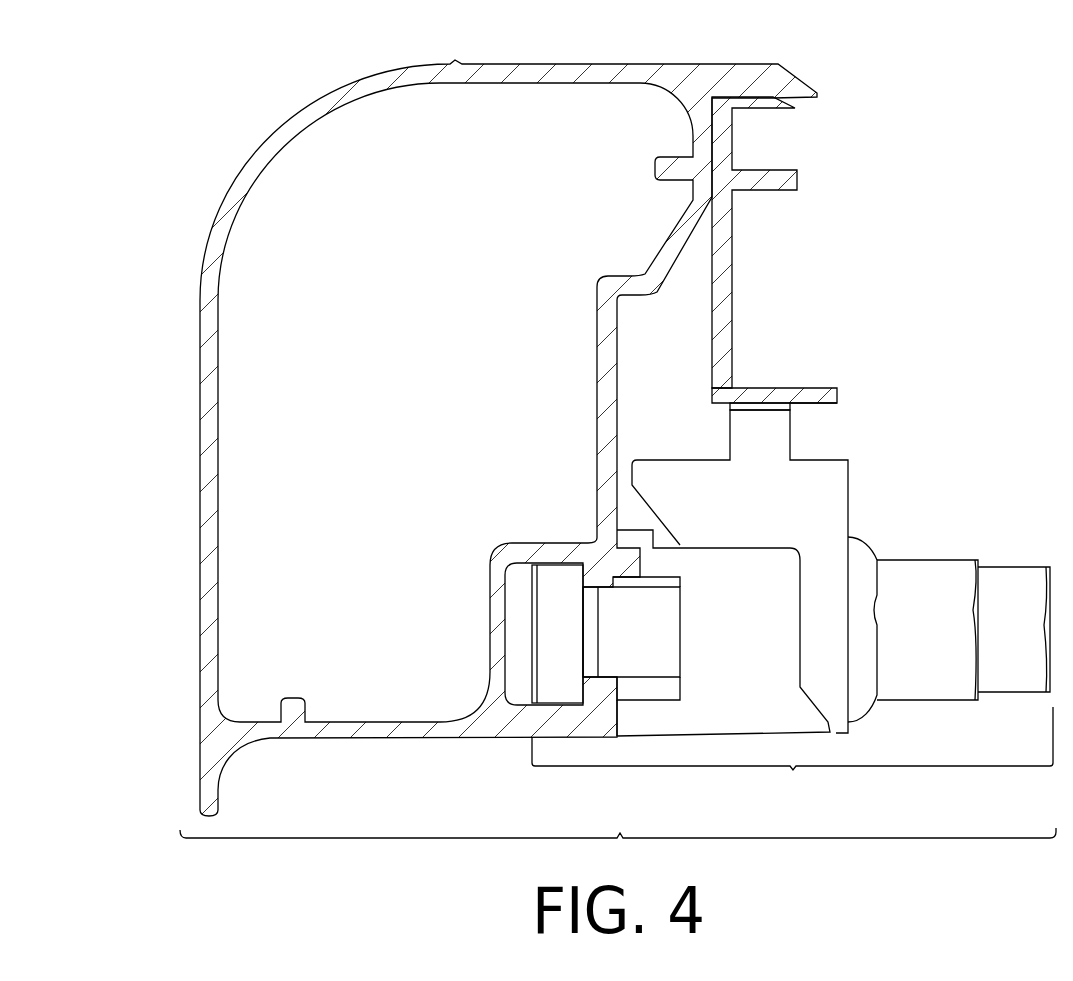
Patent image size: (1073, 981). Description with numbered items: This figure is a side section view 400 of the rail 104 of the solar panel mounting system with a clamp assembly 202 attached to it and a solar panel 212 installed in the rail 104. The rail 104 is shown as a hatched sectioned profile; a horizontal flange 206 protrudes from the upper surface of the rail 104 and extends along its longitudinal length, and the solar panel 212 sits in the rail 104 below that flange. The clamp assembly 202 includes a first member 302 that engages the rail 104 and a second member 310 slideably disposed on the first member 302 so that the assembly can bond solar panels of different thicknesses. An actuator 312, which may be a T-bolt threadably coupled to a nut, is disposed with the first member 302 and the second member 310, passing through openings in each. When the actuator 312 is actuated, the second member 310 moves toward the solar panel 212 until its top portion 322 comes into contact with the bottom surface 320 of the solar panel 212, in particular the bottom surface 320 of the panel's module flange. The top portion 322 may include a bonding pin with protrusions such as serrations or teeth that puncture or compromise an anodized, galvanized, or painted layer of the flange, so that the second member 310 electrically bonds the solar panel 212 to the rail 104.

The rail 104 is at (297, 119).
The horizontal flange 206 is at (771, 63).
The solar panel 212 is at (812, 387).
The bottom surface 320 is at (837, 406).
The top portion 322 is at (728, 409).
The second member 310 is at (757, 518).
The first member 302 is at (757, 629).
The actuator 312 is at (948, 629).
The clamp assembly 202 is at (792, 754).
The side section view 400 is at (618, 847).